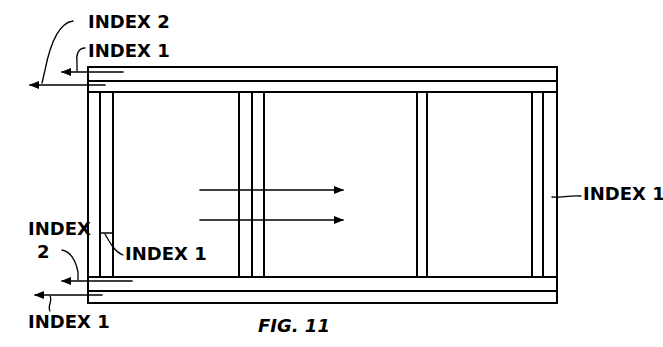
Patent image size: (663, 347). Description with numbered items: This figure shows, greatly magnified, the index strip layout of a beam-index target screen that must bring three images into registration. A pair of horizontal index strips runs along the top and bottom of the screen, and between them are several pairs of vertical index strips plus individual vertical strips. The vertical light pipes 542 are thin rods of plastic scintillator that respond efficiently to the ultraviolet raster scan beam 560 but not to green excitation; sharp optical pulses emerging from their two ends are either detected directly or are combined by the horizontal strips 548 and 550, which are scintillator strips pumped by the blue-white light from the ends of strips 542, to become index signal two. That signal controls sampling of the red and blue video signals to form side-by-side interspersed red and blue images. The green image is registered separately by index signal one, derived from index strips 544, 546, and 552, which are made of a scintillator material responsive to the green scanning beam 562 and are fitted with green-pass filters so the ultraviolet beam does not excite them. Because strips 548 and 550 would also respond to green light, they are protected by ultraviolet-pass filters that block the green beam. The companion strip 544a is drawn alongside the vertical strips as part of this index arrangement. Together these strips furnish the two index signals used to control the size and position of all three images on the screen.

The index strip (light pipe) 542 is at (92, 119).
The index strip 544 is at (106, 153).
The intermediate stile strip 544a is at (258, 261).
The index strip 546 is at (549, 73).
The horizontal index strip 548 is at (549, 88).
The horizontal index strip 550 is at (550, 286).
The index strip 552 is at (549, 298).
The ultraviolet scanning beam 560 is at (272, 190).
The green scanning beam 562 is at (272, 220).